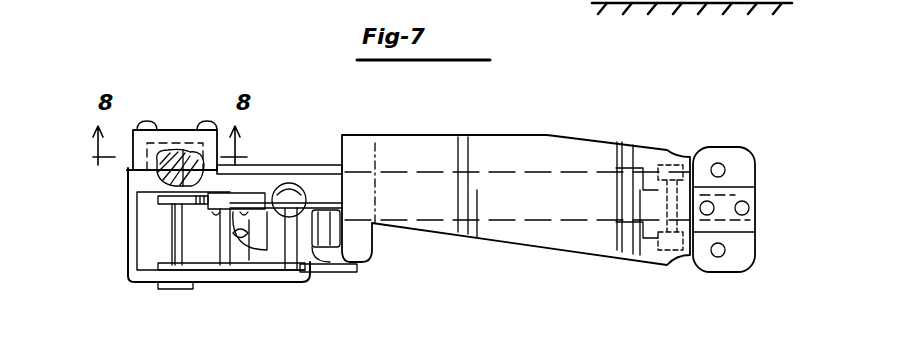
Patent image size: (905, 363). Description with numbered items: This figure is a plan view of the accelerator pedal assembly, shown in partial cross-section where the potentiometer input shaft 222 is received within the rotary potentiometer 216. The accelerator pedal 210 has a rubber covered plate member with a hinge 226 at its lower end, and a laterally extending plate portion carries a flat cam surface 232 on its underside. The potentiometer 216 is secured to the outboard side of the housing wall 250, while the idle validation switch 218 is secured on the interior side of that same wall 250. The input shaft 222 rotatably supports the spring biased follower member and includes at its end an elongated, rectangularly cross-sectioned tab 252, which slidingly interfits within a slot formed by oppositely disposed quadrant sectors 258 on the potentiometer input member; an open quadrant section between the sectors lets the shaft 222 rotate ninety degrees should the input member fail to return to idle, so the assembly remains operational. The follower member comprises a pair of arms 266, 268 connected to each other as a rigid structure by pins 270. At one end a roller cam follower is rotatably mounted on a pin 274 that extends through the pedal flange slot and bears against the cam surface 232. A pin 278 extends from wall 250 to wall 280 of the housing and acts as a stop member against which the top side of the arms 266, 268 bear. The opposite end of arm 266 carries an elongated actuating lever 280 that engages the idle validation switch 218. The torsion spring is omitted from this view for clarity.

The accelerator pedal 210 is at (550, 135).
The hinge 226 is at (681, 262).
The rotary potentiometer 216 is at (170, 127).
The tab 252 is at (183, 160).
The wall 250 is at (250, 165).
The arm 266 is at (303, 172).
The potentiometer input shaft 222 is at (168, 253).
The wall 280 is at (157, 287).
The pin 278 is at (223, 245).
The idle validation switch 218 is at (266, 215).
The pins 270 is at (285, 250).
The pin 274 is at (348, 273).
The cam surface 232 is at (343, 277).
The arm 268 is at (320, 278).
The quadrant sectors 258 is at (593, 360).